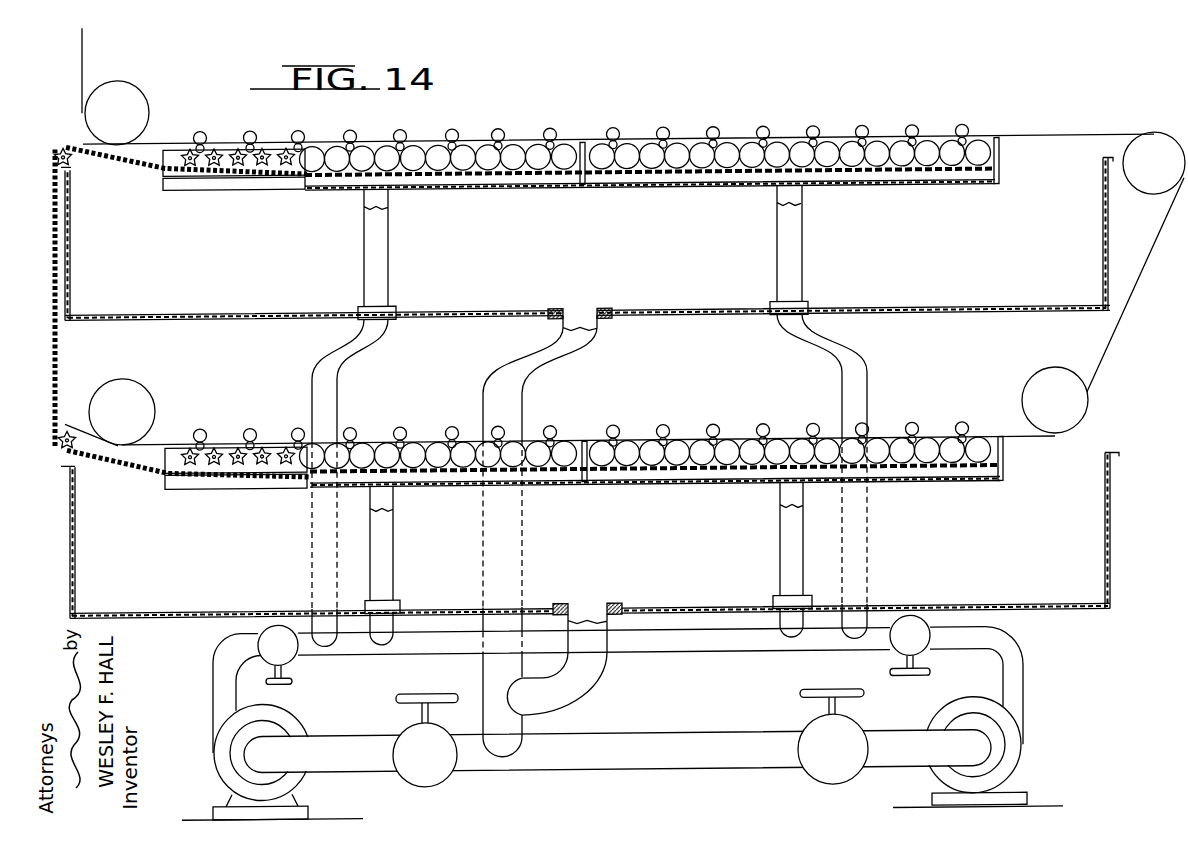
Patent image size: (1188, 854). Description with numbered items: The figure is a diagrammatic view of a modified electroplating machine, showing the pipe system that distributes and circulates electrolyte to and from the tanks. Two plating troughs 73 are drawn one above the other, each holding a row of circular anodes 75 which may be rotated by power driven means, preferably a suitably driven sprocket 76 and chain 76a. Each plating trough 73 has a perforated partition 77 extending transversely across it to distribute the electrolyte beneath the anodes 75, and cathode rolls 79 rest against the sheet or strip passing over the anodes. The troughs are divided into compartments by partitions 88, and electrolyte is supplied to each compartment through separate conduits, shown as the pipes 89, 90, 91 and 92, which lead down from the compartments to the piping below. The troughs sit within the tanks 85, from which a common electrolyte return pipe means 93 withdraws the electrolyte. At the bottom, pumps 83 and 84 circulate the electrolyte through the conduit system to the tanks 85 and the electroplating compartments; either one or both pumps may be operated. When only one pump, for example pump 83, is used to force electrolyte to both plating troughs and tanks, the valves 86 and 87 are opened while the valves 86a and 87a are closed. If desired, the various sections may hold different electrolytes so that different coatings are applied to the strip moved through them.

The plating trough 73 is at (894, 192).
The anodes 75 is at (532, 150).
The sprocket 76 is at (238, 157).
The chain 76a is at (53, 371).
The perforated partition 77 is at (669, 183).
The cathode rolls 79 is at (451, 138).
The pump 83 is at (270, 736).
The pump 84 is at (958, 716).
The tanks 85 is at (692, 321).
The valve 86 is at (270, 636).
The valve 86a is at (897, 659).
The valve 87 is at (406, 784).
The valve 87a is at (804, 742).
The partitions 88 is at (583, 150).
The pipe 89 is at (396, 564).
The pipe 90 is at (780, 554).
The pipe 91 is at (364, 243).
The pipe 92 is at (777, 252).
The common electrolyte return pipe means 93 is at (493, 366).